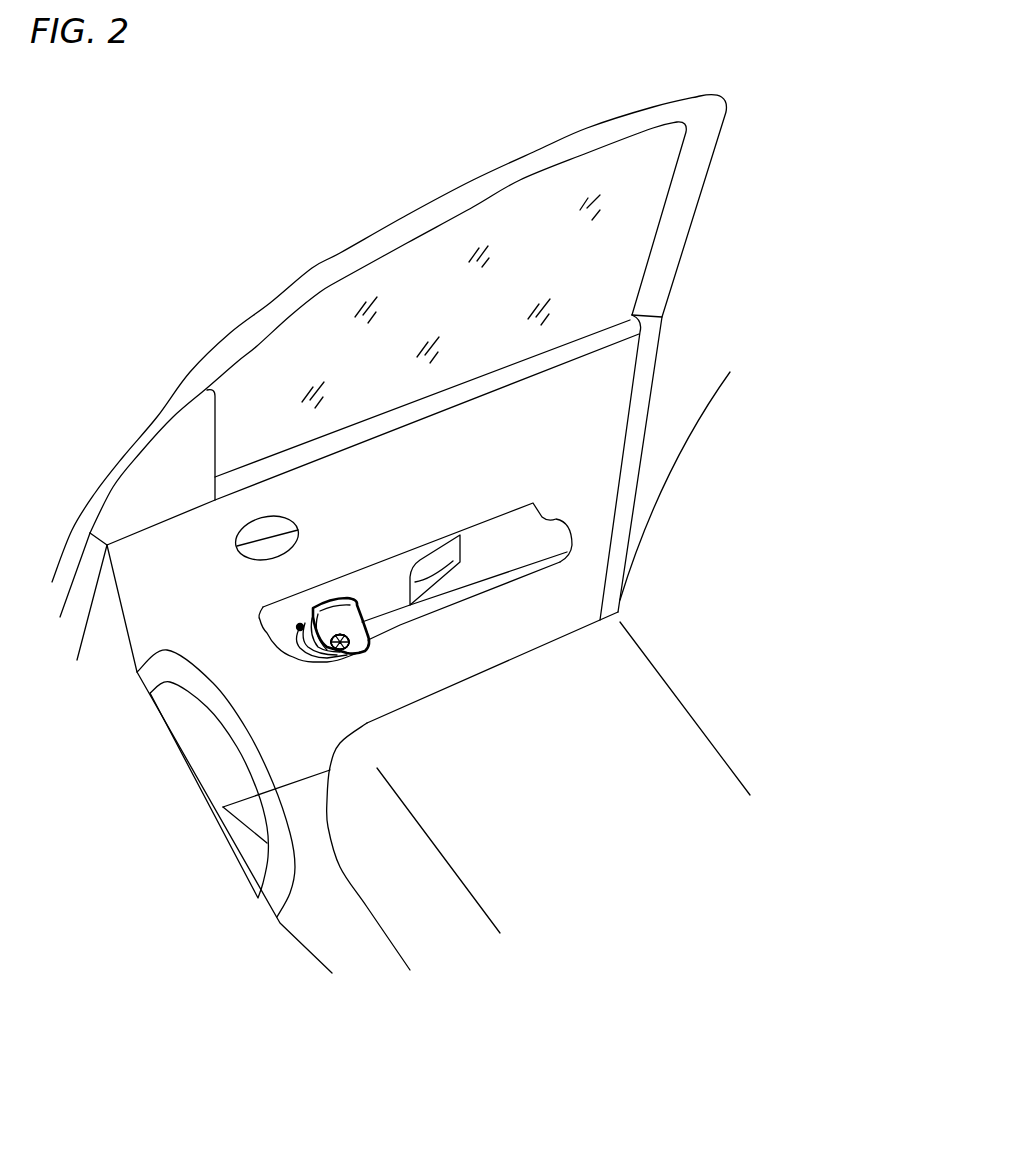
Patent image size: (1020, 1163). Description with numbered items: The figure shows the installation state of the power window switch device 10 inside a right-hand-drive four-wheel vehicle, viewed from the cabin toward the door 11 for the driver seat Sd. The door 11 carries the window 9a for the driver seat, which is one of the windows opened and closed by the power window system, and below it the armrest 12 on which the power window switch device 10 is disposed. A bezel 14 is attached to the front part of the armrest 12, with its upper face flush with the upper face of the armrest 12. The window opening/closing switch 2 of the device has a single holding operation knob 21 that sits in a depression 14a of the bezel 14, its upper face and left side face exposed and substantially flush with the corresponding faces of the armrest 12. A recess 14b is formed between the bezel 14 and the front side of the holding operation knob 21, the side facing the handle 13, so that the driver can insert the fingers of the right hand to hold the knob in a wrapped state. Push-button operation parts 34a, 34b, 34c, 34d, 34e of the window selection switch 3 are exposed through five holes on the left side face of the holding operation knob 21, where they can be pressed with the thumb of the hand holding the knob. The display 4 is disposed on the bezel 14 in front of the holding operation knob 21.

The window for a driver seat 9a is at (525, 207).
The power window switch device 10 is at (359, 671).
The door 11 is at (590, 433).
The armrest 12 is at (500, 513).
The handle 13 is at (185, 650).
The bezel 14 is at (290, 636).
The depression 14a is at (330, 656).
The recess 14b is at (312, 638).
The window opening/closing switch 2 is at (337, 620).
The holding operation knob 21 is at (333, 627).
The window selection switch 3 is at (362, 651).
The operation part 34a is at (340, 642).
The operation part 34b is at (340, 642).
The operation part 34c is at (340, 642).
The operation part 34d is at (340, 642).
The operation part 34e is at (340, 642).
The display 4 is at (300, 625).
The driver seat Sd is at (613, 837).